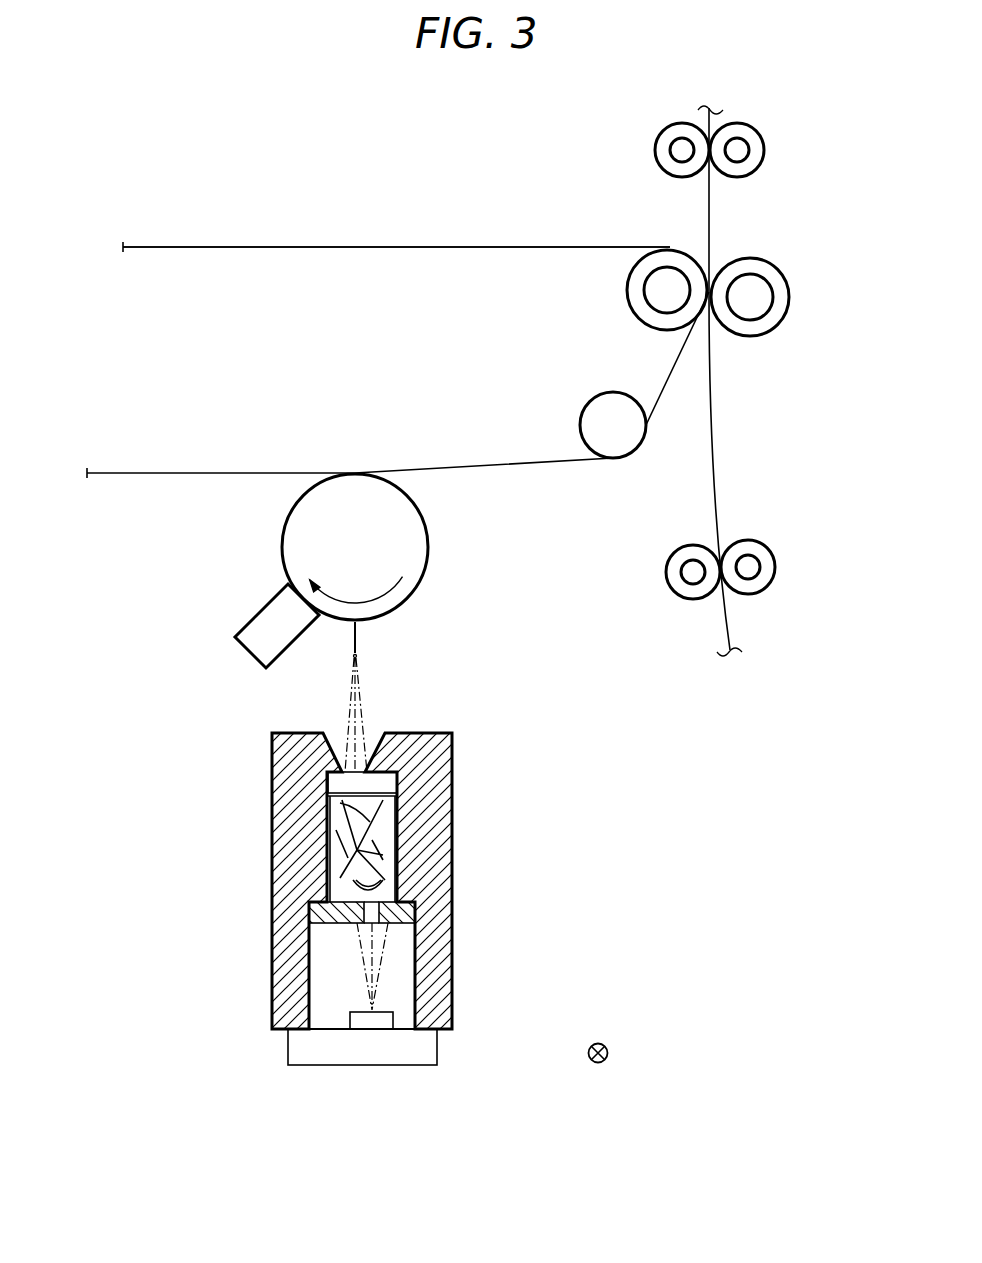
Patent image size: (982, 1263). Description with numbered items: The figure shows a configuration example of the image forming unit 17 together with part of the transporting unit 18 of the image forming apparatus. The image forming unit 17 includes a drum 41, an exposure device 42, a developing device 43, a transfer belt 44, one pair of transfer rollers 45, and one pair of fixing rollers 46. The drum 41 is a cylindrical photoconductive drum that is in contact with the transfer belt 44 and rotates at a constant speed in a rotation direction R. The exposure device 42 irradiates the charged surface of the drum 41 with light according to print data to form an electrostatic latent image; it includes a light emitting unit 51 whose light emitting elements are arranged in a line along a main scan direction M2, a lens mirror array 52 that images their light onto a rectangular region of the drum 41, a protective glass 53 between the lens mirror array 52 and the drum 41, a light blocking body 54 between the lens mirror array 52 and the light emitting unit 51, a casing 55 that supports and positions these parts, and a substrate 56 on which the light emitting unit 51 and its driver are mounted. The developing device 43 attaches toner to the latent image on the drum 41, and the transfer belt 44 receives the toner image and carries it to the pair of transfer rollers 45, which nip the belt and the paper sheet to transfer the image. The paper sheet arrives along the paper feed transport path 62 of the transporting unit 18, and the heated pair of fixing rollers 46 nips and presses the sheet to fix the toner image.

The image forming unit 17 is at (335, 215).
The transporting unit 18 is at (756, 381).
The drum 41 is at (282, 538).
The exposure device 42 is at (447, 843).
The developing device 43 is at (245, 653).
The transfer belt 44 is at (197, 249).
The pair of transfer rollers 45 is at (627, 290).
The pair of fixing rollers 46 is at (655, 150).
The light emitting unit 51 is at (348, 1023).
The lens mirror array 52 is at (360, 848).
The protective glass 53 is at (393, 782).
The light blocking body 54 is at (407, 912).
The casing 55 is at (430, 952).
The substrate 56 is at (427, 1049).
The paper feed transport path 62 is at (714, 480).
The main scan direction M2 is at (598, 1043).
The rotation direction R is at (356, 589).